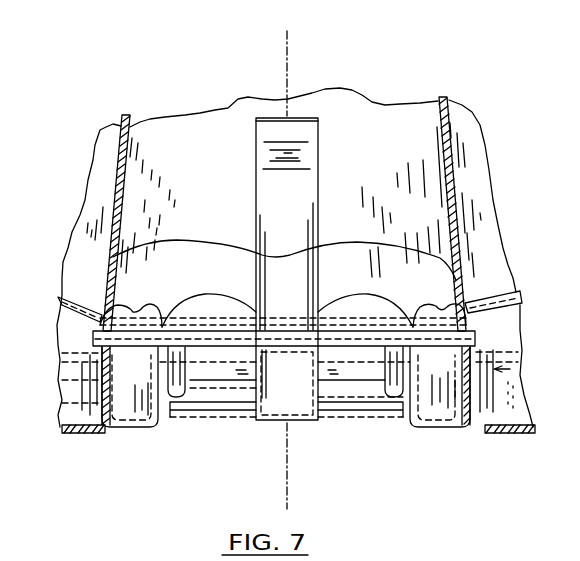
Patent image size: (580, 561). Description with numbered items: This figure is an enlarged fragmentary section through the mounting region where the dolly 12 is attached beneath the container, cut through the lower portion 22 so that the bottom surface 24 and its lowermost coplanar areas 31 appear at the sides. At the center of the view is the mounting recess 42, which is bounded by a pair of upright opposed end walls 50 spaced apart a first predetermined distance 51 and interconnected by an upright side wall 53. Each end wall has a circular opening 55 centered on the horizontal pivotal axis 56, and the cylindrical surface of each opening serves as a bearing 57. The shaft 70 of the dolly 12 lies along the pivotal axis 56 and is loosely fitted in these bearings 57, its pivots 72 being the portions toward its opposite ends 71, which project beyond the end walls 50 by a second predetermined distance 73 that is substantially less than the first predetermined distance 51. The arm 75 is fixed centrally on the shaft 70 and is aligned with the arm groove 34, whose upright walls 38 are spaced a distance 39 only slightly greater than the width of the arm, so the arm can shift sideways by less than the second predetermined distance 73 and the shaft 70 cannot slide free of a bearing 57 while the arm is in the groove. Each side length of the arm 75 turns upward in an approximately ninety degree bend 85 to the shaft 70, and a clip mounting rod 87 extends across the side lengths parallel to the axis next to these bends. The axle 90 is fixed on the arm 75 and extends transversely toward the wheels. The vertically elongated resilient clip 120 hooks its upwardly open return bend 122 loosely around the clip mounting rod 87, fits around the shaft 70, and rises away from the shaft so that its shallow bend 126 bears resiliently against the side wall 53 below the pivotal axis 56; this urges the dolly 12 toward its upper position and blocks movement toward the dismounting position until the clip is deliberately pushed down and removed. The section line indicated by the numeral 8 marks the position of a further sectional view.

The section line 8- 8 is at (230, 35).
The dolly 12 is at (356, 441).
The lower portion 22 is at (393, 95).
The bottom surface 24 is at (500, 436).
The coplanar areas 31 is at (82, 429).
The arm groove 34 is at (344, 434).
The upright walls 38 is at (160, 429).
The predetermined distance 39 is at (305, 303).
The mounting recess 42 is at (240, 394).
The end walls 50 is at (120, 402).
The first predetermined distance 51 is at (303, 257).
The side wall 53 is at (228, 206).
The circular opening 55 is at (90, 322).
The pivotal axis 56 is at (482, 331).
The bearing 57 is at (103, 356).
The shaft 70 is at (145, 361).
The opposite ends 71 is at (92, 342).
The pivots 72 is at (186, 373).
The second predetermined distance 73 is at (136, 307).
The arm 75 is at (196, 400).
The bend 85 is at (178, 400).
The clip mounting rod 87 is at (334, 407).
The axle 90 is at (520, 375).
The resilient clip 120 is at (330, 162).
The return bend 122 is at (280, 421).
The shallow bend 126 is at (262, 151).